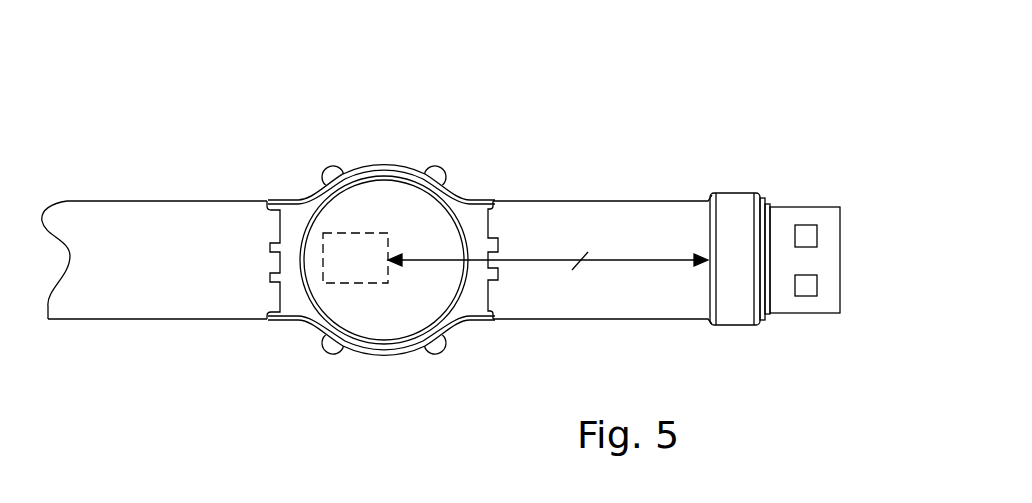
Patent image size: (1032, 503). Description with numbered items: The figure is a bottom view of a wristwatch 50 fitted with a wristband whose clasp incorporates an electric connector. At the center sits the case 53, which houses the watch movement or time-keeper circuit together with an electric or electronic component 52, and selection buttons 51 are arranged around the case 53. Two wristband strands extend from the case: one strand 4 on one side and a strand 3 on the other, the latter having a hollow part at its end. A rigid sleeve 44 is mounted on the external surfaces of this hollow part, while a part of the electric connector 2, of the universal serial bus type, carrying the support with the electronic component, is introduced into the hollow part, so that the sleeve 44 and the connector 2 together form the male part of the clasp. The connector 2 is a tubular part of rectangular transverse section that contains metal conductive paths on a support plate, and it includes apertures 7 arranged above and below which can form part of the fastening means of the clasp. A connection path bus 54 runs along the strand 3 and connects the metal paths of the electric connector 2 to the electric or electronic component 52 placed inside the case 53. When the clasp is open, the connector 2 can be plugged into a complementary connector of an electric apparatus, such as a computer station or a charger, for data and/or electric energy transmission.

The electric connector 2 is at (822, 213).
The strand 3 is at (583, 217).
The strap portion 4 is at (183, 220).
The apertures 7 is at (806, 236).
The rigid sleeve 44 is at (735, 213).
The wristwatch 50 is at (354, 392).
The selection buttons 51 is at (337, 347).
The electric or electronic component 52 is at (367, 253).
The case 53 is at (305, 195).
The connection path bus 54 is at (537, 262).